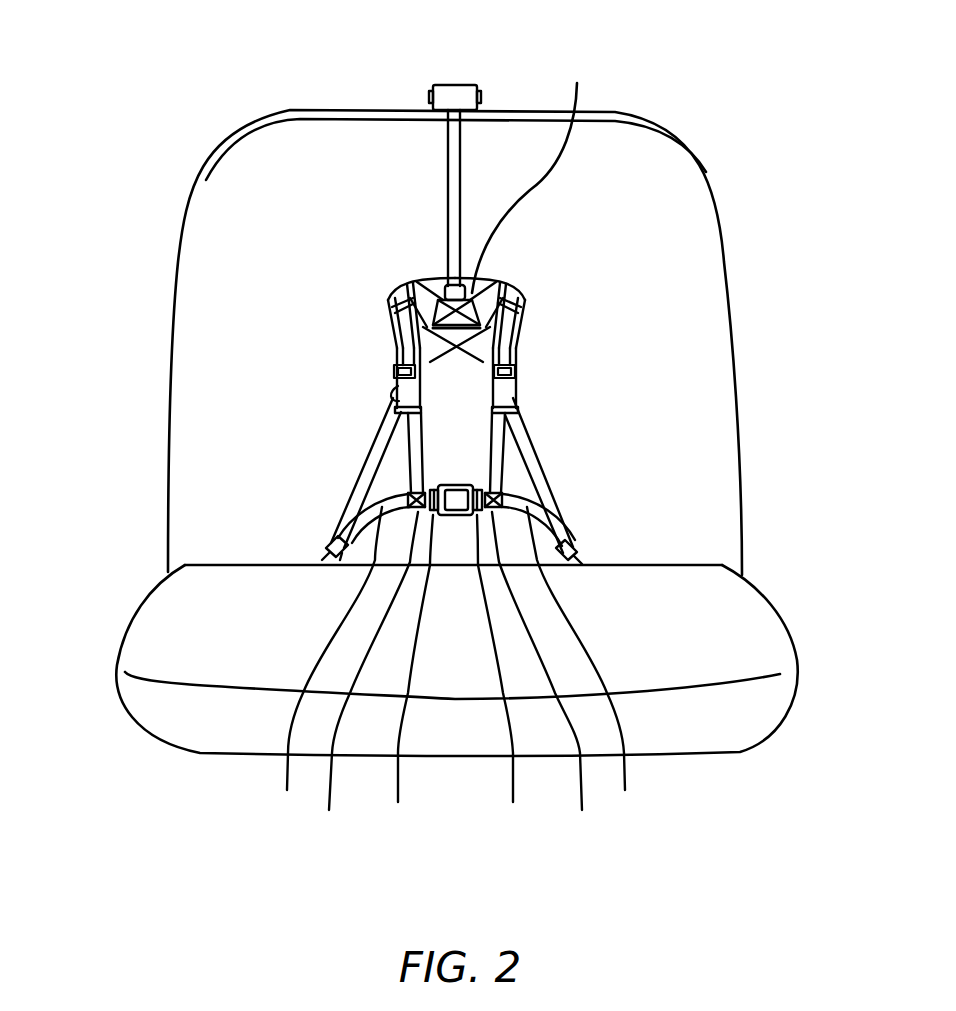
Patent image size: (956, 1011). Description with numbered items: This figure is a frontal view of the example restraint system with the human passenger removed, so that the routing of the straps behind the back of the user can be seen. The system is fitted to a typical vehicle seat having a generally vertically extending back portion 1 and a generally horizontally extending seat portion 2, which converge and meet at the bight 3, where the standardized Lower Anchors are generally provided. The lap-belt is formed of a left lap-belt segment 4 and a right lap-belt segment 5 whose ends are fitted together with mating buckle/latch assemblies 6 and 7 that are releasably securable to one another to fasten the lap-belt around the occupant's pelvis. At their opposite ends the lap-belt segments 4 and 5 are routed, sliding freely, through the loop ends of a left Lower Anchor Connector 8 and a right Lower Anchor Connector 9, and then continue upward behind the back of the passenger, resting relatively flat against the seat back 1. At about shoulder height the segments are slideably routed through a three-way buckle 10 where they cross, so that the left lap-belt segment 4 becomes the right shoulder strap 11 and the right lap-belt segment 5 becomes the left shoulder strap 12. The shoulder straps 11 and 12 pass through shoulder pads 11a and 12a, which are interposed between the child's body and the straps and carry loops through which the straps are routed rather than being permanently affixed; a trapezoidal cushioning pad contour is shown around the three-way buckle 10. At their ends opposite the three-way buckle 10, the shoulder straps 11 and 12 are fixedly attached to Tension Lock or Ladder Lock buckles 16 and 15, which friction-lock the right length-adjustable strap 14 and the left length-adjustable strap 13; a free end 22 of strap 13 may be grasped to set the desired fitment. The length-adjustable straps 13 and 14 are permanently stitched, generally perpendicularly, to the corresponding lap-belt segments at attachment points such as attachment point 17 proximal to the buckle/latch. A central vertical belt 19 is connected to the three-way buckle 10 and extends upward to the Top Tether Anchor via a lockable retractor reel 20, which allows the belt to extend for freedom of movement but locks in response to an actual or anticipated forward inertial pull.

The back portion 1 is at (227, 290).
The seat portion 2 is at (165, 613).
The bight 3 is at (235, 562).
The left lap-belt segment 4 is at (330, 664).
The right lap-belt segment 5 is at (570, 610).
The buckle/latch assembly 6 is at (412, 674).
The buckle/latch assembly 7 is at (500, 674).
The left Lower Anchor Connector 8 is at (330, 560).
The right Lower Anchor Connector 9 is at (590, 555).
The three-way buckle 10 is at (534, 175).
The right shoulder strap 11 is at (507, 348).
The shoulder pad 11a is at (520, 322).
The left shoulder strap 12 is at (402, 348).
The shoulder pad 12a is at (388, 320).
The left length-adjustable strap 13 is at (410, 458).
The right length-adjustable strap 14 is at (497, 457).
The buckle 15 is at (393, 371).
The buckle 16 is at (513, 372).
The attachment point 17 is at (366, 676).
The central vertical belt 19 is at (457, 167).
The lockable retractor reel 20 is at (455, 86).
The end of strap 22 is at (393, 398).